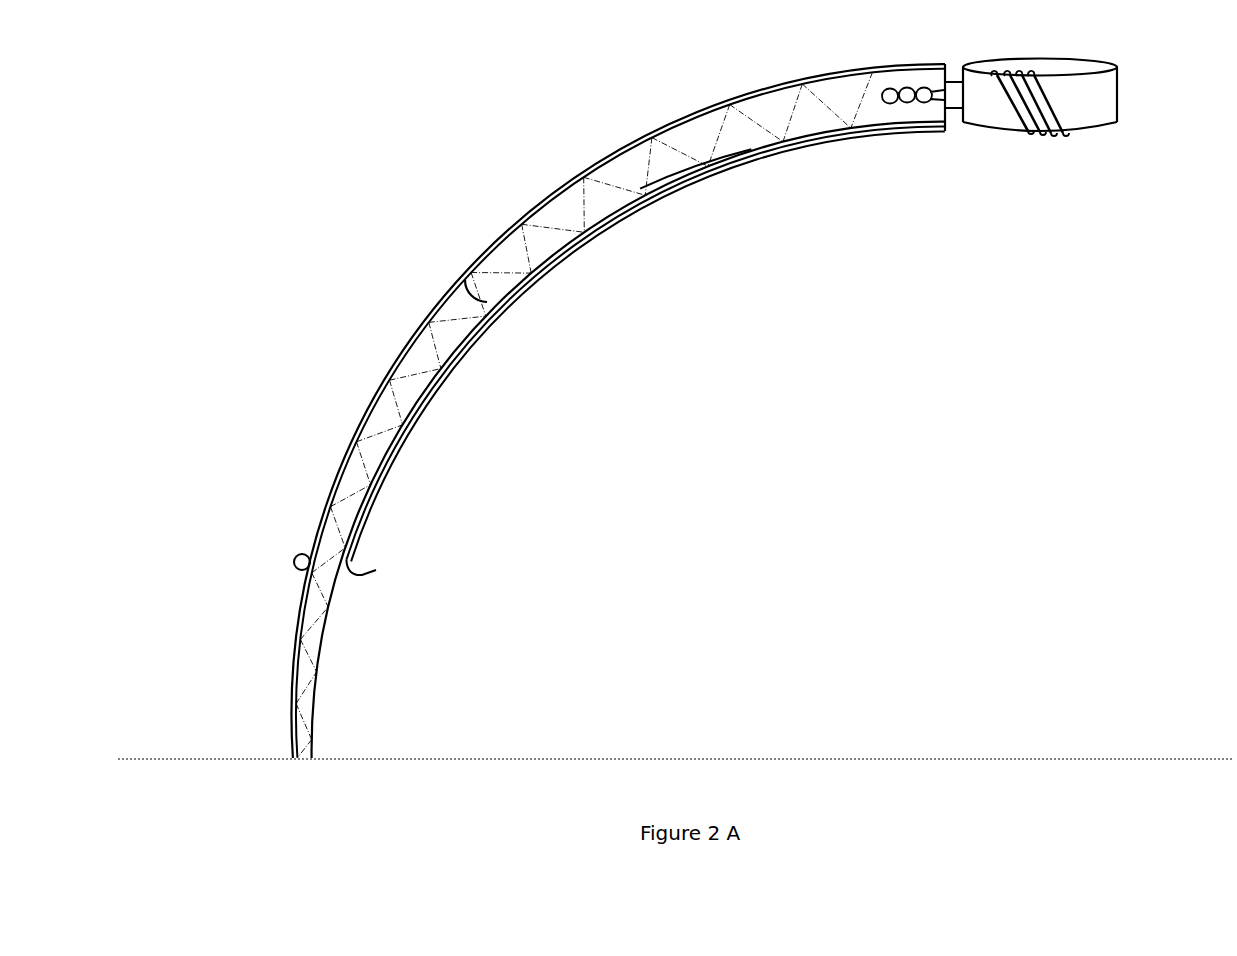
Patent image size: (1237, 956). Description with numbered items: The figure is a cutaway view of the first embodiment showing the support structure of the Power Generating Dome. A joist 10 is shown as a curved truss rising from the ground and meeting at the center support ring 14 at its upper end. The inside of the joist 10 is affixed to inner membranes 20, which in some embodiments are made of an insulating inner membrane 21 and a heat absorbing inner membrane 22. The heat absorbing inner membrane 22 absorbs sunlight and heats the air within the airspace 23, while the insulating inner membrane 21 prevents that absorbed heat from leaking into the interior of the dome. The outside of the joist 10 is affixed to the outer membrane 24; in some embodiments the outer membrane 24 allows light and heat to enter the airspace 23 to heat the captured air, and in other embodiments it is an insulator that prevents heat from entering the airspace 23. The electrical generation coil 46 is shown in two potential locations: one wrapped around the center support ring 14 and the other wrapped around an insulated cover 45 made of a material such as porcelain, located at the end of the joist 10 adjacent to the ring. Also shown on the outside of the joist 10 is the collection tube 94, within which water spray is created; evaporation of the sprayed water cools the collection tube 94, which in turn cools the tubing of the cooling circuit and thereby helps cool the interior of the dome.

The joist 10 is at (323, 643).
The center support ring 14 is at (1122, 93).
The inner membrane 20 is at (377, 577).
The insulating inner membrane 21 is at (568, 260).
The heat absorbing inner membrane 22 is at (650, 203).
The airspace 23 is at (465, 278).
The outer membrane 24 is at (515, 207).
The insulated cover 45 is at (875, 104).
The electrical generation coil 46 is at (1003, 112).
The collection tube 94 is at (287, 556).